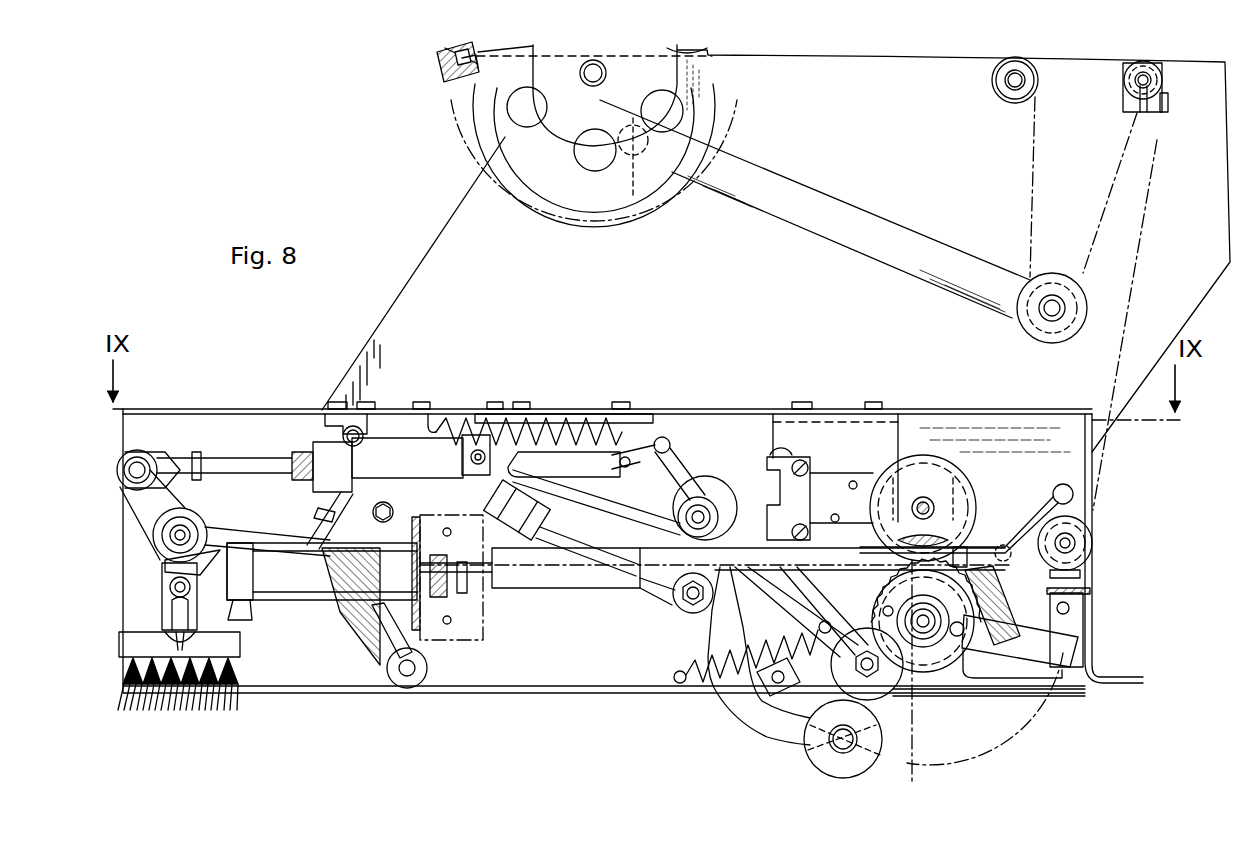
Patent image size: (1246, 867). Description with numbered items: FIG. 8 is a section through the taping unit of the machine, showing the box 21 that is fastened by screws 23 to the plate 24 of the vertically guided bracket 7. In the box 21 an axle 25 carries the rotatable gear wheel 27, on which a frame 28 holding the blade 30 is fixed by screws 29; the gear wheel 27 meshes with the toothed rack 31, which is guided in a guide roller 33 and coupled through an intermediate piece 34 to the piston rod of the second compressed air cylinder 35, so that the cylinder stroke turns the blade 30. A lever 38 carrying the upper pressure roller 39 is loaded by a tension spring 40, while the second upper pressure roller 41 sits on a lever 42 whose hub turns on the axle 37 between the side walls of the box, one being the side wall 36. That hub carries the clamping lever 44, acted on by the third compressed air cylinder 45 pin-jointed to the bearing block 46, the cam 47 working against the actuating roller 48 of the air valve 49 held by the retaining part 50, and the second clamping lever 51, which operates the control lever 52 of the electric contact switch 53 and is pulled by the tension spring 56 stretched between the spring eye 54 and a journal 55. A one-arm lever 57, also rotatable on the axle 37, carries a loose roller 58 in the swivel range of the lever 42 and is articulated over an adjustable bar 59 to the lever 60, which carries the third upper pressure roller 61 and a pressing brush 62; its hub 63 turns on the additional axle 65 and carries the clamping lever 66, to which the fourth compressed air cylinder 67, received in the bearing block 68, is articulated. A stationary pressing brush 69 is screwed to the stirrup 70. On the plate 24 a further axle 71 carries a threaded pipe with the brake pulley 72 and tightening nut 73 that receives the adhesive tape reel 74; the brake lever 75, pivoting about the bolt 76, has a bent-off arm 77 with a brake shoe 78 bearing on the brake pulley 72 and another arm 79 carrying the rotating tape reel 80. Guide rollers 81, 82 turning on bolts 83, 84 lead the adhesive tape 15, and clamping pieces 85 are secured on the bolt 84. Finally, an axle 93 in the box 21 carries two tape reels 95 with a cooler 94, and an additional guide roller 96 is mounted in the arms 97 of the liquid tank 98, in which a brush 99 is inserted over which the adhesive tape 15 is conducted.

The bracket 7 is at (462, 187).
The adhesive tape 15 is at (1034, 170).
The box 21 is at (480, 696).
The screws 23 is at (386, 506).
The plate 24 is at (407, 290).
The axle 25 is at (932, 640).
The gear wheel 27 is at (945, 684).
The frame 28 is at (1075, 640).
The screws 29 is at (957, 638).
The blade 30 is at (1052, 686).
The rack 31 is at (815, 570).
The wheel 33 is at (970, 506).
The piston rod 34 is at (557, 590).
The second compressed air cylinder 35 is at (283, 600).
The side wall 36 is at (720, 415).
The axle 37 is at (680, 525).
The lever 38 is at (787, 612).
The upper pressure roller 39 is at (880, 692).
The tension spring 40 is at (785, 655).
The second upper pressure roller 41 is at (868, 762).
The lever 42 is at (742, 722).
The clamping lever 44 is at (720, 592).
The third compressed air cylinder 45 is at (421, 537).
The bearing block 46 is at (372, 428).
The cam 47 is at (716, 478).
The actuating roller 48 is at (787, 502).
The air valve 49 is at (826, 518).
The retaining part 50 is at (828, 420).
The second clamping lever 51 is at (676, 452).
The control lever 52 is at (633, 467).
The electric contact switch 53 is at (594, 512).
The spring eye 54 is at (432, 420).
The journal 55 is at (666, 437).
The tension spring 56 is at (552, 418).
The one-arm lever 57 is at (600, 548).
The clamp 58 is at (540, 510).
The adjustable bar 59 is at (326, 520).
The lever 60 is at (256, 534).
The third upper pressure roller 61 is at (426, 660).
The pressing brush 62 is at (375, 656).
The hub 63 is at (196, 522).
The additional axle 65 is at (170, 580).
The clamping lever 66 is at (148, 520).
The fourth compressed air cylinder 67 is at (312, 438).
The bearing block 68 is at (500, 415).
The stationary pressing brush 69 is at (236, 700).
The stirrup 70 is at (166, 615).
The axle 71 is at (590, 82).
The brake pulley 72 is at (598, 178).
The tightening nut 73 is at (686, 86).
The adhesive tape reel 74 is at (742, 103).
The brake lever 75 is at (723, 200).
The bolt 76 is at (637, 161).
The arm 77 is at (476, 82).
The brake shoe 78 is at (450, 82).
The arm 79 is at (816, 232).
The rotating tape reel 80 is at (1040, 338).
The guide roller 81 is at (1013, 92).
The guide roller 82 is at (1160, 88).
The bolt 83 is at (1003, 90).
The bolt 84 is at (1138, 82).
The clamping pieces 85 is at (1156, 108).
The axle 93 is at (1078, 545).
The cooler 94 is at (1086, 568).
The tape reels 95 is at (1088, 527).
The additional guide roller 96 is at (838, 624).
The arms 97 is at (968, 548).
The liquid tank 98 is at (1014, 550).
The brush 99 is at (990, 604).